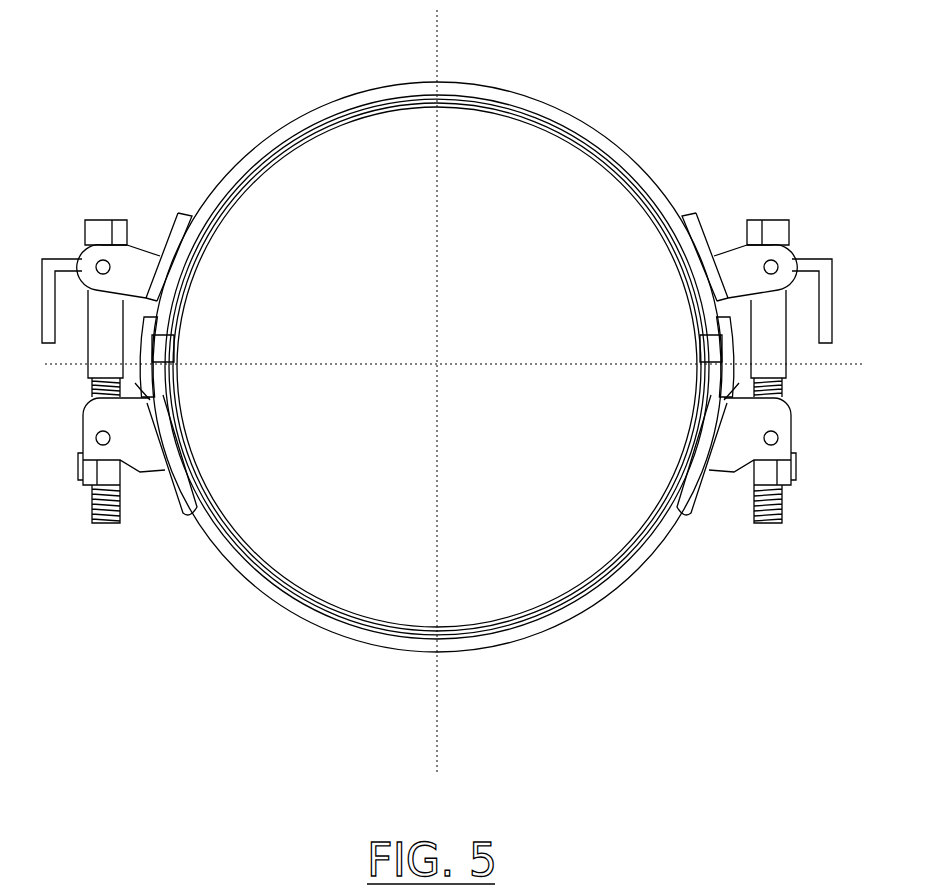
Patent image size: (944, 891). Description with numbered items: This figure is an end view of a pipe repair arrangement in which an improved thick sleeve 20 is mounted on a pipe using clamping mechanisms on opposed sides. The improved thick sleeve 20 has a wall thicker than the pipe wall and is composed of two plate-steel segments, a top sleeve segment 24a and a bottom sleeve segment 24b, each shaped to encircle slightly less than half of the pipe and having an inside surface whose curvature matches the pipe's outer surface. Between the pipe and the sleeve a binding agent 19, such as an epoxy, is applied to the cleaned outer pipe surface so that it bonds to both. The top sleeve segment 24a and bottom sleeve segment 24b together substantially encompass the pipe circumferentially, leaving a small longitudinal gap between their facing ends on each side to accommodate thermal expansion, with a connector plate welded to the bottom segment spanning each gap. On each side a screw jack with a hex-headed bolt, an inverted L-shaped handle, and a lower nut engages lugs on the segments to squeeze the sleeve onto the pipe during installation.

The binding agent 19 is at (364, 105).
The improved thick sleeve 20 is at (574, 641).
The top sleeve segment 24a is at (486, 88).
The bottom sleeve segment 24b is at (377, 633).